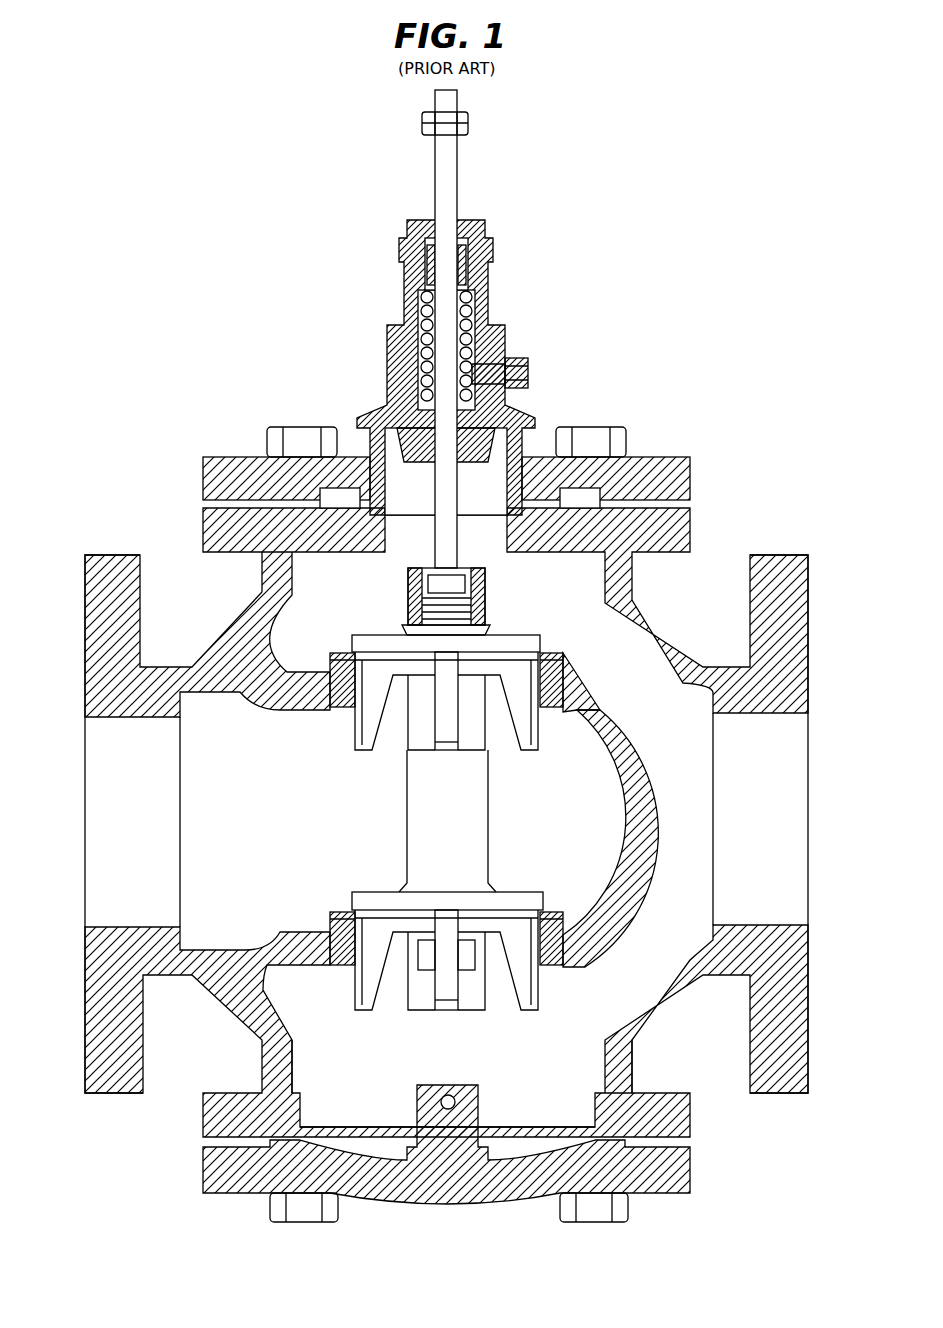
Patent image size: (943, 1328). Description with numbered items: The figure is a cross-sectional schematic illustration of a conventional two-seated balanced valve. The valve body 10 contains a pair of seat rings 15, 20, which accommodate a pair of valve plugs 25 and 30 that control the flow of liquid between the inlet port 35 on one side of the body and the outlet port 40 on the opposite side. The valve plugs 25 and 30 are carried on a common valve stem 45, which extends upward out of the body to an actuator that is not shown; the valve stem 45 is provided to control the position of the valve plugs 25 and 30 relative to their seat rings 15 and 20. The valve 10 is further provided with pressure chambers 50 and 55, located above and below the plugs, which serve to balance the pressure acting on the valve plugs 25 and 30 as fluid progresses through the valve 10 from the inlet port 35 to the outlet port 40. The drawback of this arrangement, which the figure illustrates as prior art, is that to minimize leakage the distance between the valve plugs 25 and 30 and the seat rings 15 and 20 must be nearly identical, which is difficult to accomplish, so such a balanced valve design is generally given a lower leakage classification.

The valve body 10 is at (699, 426).
The seat ring 15 is at (560, 655).
The seat ring 20 is at (562, 912).
The valve plug 25 is at (510, 633).
The valve plug 30 is at (500, 890).
The inlet port 35 is at (85, 840).
The outlet port 40 is at (808, 850).
The valve stem 45 is at (458, 184).
The pressure chamber 50 is at (288, 582).
The pressure chamber 55 is at (407, 1062).